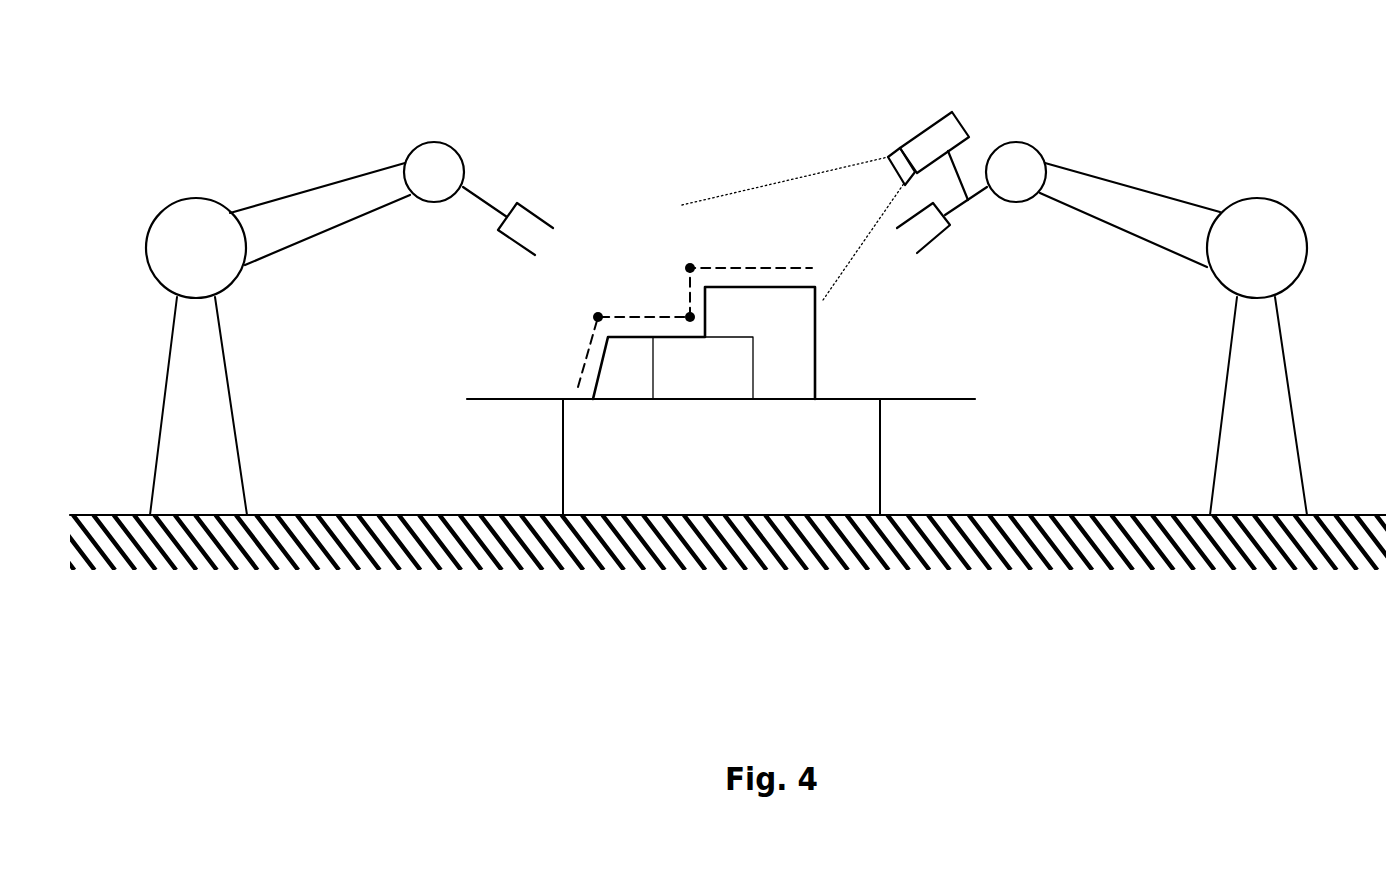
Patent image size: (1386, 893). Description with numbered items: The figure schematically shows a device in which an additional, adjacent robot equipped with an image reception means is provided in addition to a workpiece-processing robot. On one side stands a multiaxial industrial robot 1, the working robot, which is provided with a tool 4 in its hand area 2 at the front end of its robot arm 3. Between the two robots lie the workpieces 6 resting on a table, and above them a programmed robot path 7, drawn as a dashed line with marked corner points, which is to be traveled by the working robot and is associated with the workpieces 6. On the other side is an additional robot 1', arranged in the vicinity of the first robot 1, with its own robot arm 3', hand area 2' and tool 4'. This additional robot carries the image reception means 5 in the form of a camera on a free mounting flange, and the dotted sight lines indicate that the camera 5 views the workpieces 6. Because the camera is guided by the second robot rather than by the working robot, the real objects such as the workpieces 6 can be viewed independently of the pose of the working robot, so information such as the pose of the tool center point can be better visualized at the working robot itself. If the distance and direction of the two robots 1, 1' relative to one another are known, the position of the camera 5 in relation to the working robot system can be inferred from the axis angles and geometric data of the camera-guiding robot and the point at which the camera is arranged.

The industrial robot 1 is at (166, 356).
The additional robot 1' is at (1283, 356).
The hand area 2 is at (434, 239).
The hand area 2' is at (1016, 212).
The robot arm 3 is at (320, 182).
The robot arm 3' is at (1130, 186).
The tool 4 is at (508, 269).
The tool 4' is at (942, 277).
The image reception means 5 is at (935, 124).
The workpieces 6 is at (798, 358).
The programmed robot path 7 is at (637, 300).